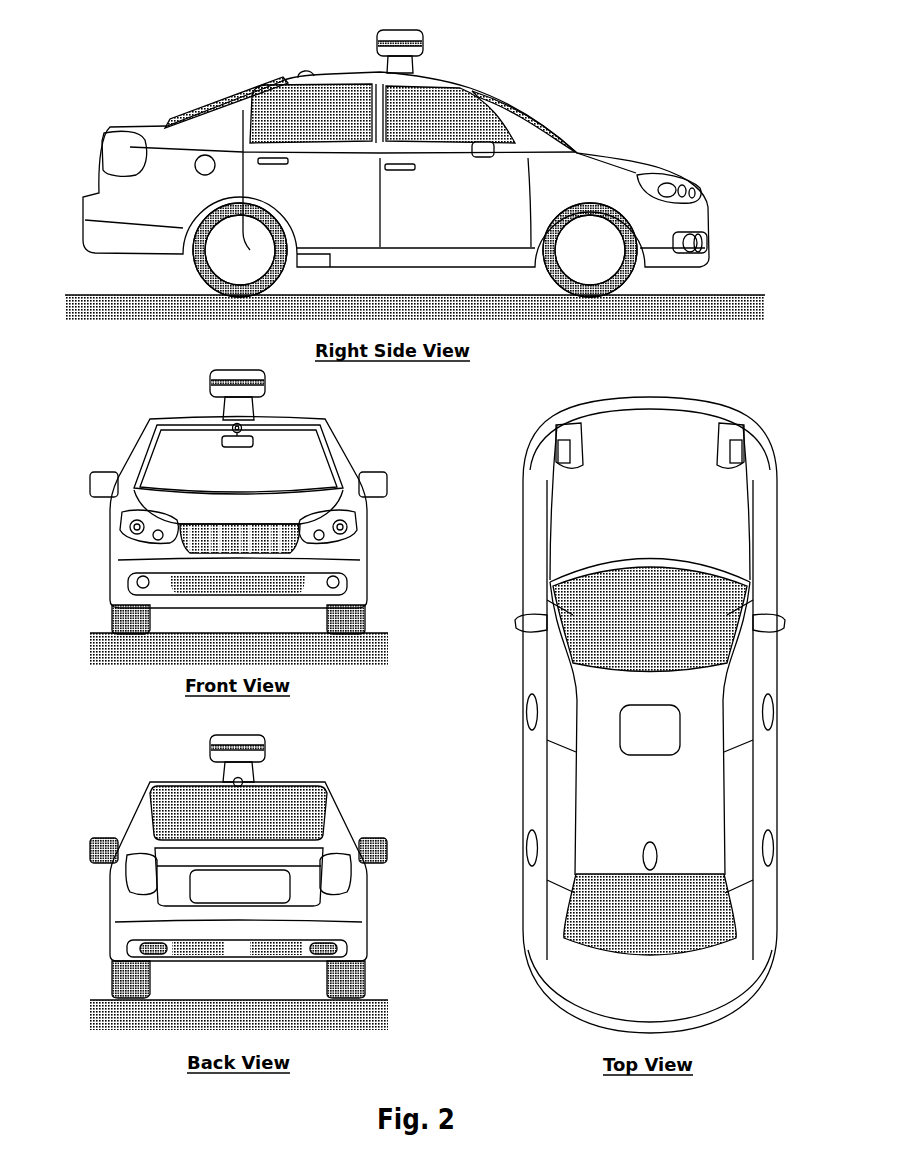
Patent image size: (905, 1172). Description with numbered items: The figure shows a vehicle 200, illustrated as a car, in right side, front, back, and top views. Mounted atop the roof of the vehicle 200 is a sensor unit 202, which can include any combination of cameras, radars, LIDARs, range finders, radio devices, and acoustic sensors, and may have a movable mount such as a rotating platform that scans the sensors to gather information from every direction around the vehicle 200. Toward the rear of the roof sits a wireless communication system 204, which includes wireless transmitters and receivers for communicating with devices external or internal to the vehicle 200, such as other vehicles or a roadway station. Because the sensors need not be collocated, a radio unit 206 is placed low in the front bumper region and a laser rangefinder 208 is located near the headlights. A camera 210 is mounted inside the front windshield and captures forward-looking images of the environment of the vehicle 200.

The vehicle 200 is at (76, 116).
The sensor unit 202 is at (428, 53).
The wireless communication system 204 is at (301, 70).
The radio unit 206 is at (708, 242).
The laser rangefinder 208 is at (697, 197).
The camera 210 is at (246, 432).